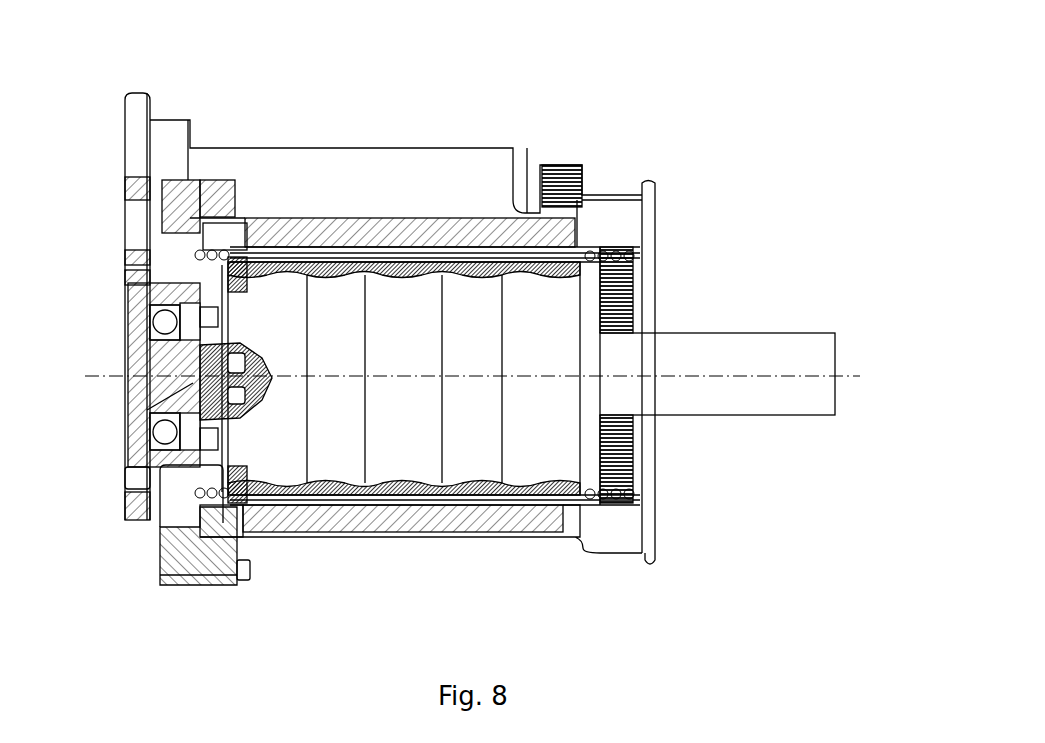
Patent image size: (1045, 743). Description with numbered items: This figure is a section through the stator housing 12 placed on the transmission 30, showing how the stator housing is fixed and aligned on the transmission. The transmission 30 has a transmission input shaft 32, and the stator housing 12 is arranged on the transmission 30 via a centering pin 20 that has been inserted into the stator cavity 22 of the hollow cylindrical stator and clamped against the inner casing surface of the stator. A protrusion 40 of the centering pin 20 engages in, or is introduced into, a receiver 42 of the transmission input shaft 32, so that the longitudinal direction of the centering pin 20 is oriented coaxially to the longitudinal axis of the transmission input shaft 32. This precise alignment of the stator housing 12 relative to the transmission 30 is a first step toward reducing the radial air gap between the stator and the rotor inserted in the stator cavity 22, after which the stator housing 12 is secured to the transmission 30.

The transmission 30 is at (142, 90).
The stator housing 12 is at (403, 217).
The centering pin 20 is at (555, 320).
The stator cavity 22 is at (338, 487).
The transmission input shaft 32 is at (135, 367).
The receiver 42 is at (128, 410).
The protrusion 40 is at (197, 422).